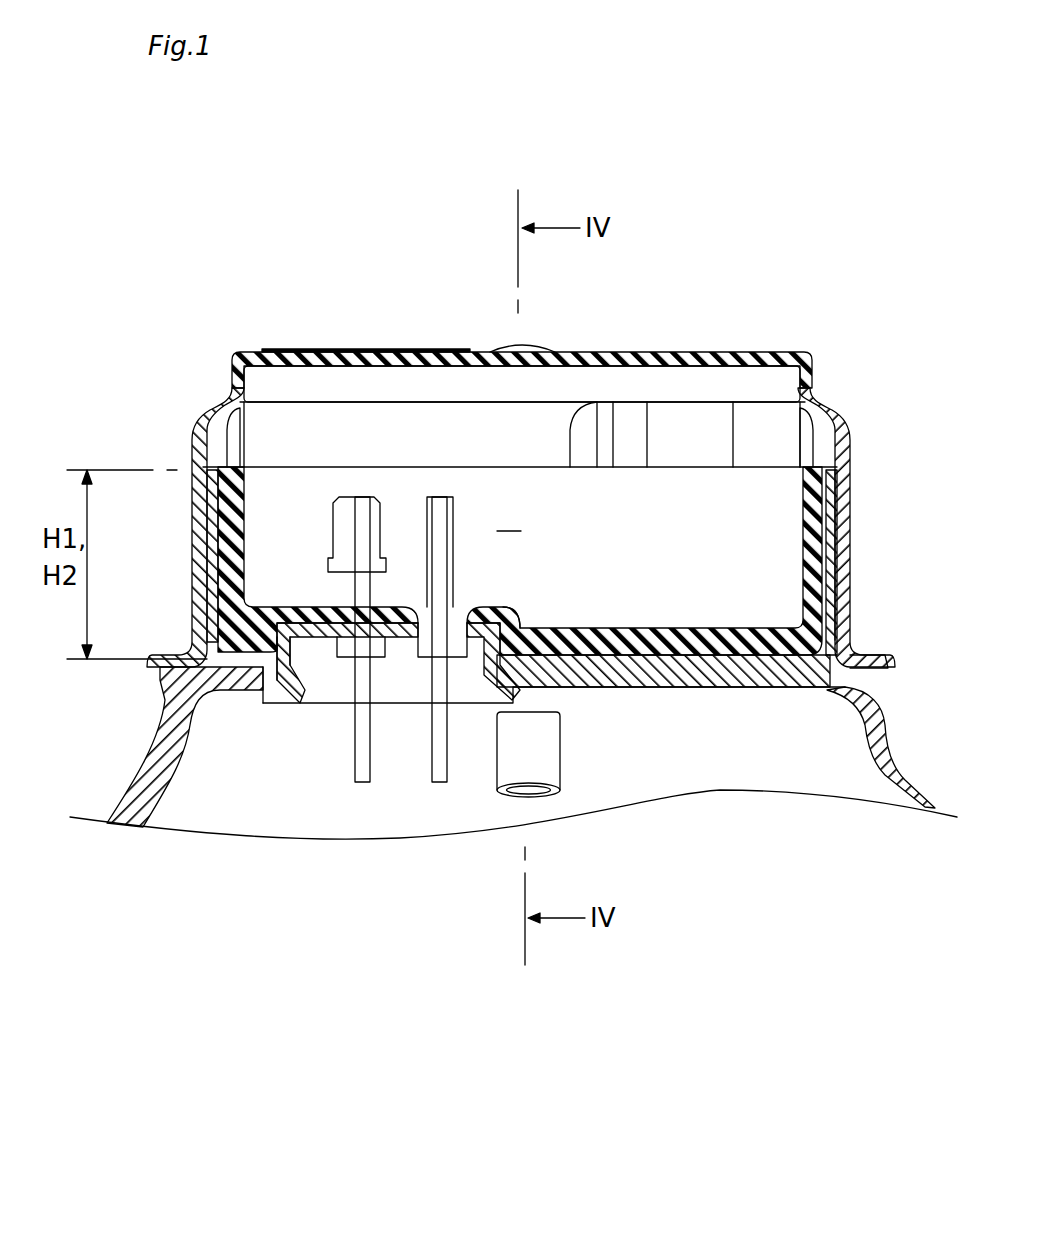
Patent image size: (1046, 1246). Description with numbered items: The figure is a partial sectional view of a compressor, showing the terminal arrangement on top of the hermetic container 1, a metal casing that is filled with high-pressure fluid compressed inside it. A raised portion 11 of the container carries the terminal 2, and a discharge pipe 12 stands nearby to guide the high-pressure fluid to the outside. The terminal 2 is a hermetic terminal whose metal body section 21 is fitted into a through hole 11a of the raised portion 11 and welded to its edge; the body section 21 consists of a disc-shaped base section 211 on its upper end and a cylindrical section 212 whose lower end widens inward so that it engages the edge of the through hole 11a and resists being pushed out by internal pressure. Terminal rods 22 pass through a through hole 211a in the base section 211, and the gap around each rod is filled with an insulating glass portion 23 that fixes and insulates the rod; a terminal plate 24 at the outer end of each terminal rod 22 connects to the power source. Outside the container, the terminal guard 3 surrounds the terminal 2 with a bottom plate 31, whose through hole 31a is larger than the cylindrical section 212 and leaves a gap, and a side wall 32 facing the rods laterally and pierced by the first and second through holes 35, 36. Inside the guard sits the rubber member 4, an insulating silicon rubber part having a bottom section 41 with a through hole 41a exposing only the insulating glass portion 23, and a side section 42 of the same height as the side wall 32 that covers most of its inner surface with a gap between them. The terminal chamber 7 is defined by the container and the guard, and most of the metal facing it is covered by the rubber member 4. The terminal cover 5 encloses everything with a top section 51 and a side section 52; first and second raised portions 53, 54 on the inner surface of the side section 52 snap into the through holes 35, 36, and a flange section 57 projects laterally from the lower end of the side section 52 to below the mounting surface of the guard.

The hermetic container 1 is at (512, 782).
The raised portion 11 is at (867, 712).
The through hole 11a is at (262, 693).
The discharge pipe 12 is at (512, 793).
The terminal 2 is at (402, 664).
The body section 21 is at (402, 820).
The base section 211 is at (320, 630).
The through hole 211a is at (462, 630).
The cylindrical section 212 is at (285, 645).
The terminal rod 22 is at (358, 782).
The insulating glass portion 23 is at (347, 648).
The terminal plate 24 is at (352, 497).
The terminal guard 3 is at (713, 693).
The bottom plate 31 is at (770, 660).
The through hole 31a is at (482, 643).
The side wall 32 is at (832, 600).
The first through hole 35 is at (205, 500).
The second through hole 36 is at (832, 507).
The rubber member 4 is at (469, 562).
The bottom section 41 is at (678, 640).
The through hole 41a is at (425, 610).
The side section 42 is at (232, 572).
The terminal cover 5 is at (335, 346).
The top section 51 is at (288, 350).
The side section 52 is at (200, 440).
The first raised portion 53 is at (205, 522).
The second raised portion 54 is at (832, 527).
The flange section 57 is at (860, 660).
The terminal chamber 7 is at (509, 516).